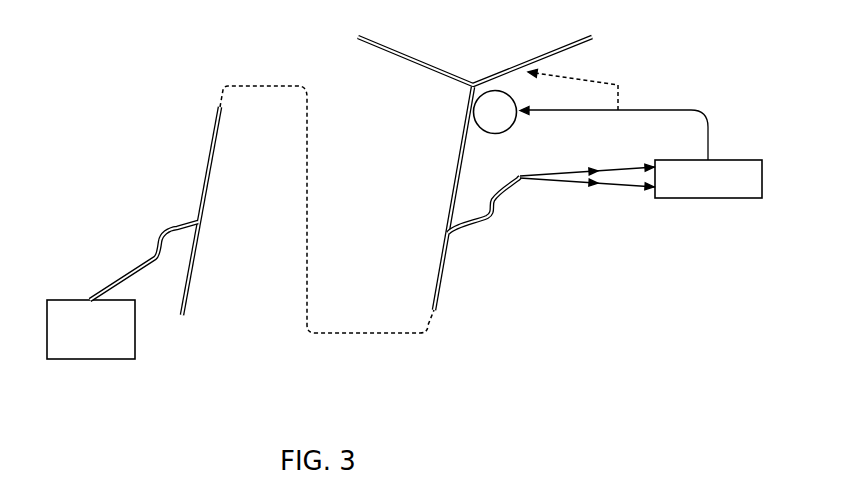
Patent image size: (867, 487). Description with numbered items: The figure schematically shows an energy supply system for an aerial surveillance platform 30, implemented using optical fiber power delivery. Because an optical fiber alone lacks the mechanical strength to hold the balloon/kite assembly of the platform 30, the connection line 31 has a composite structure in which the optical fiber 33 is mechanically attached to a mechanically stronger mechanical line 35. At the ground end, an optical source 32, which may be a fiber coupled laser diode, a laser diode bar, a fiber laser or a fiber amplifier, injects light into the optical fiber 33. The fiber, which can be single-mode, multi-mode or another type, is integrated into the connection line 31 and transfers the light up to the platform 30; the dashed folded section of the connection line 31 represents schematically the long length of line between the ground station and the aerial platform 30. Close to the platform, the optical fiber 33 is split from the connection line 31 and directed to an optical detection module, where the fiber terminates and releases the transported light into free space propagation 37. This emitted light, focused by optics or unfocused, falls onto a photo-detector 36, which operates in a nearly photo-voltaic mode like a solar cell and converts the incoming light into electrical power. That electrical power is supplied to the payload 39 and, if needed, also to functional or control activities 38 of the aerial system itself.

The aerial surveillance platform 30 is at (398, 55).
The connection line 31 is at (211, 163).
The optical source 32 is at (135, 340).
The optical fiber 33 is at (123, 277).
The mechanical line 35 is at (188, 292).
The photo-detector 36 is at (712, 198).
The free space propagation 37 is at (617, 182).
The functional or control activities 38 is at (618, 85).
The payload 39 is at (510, 128).